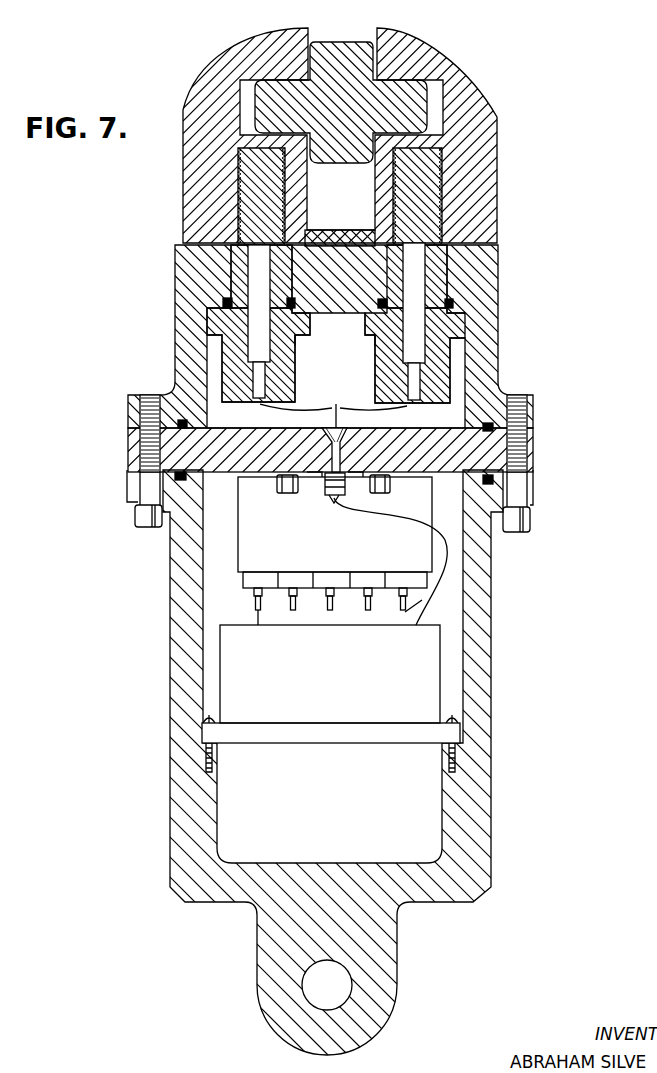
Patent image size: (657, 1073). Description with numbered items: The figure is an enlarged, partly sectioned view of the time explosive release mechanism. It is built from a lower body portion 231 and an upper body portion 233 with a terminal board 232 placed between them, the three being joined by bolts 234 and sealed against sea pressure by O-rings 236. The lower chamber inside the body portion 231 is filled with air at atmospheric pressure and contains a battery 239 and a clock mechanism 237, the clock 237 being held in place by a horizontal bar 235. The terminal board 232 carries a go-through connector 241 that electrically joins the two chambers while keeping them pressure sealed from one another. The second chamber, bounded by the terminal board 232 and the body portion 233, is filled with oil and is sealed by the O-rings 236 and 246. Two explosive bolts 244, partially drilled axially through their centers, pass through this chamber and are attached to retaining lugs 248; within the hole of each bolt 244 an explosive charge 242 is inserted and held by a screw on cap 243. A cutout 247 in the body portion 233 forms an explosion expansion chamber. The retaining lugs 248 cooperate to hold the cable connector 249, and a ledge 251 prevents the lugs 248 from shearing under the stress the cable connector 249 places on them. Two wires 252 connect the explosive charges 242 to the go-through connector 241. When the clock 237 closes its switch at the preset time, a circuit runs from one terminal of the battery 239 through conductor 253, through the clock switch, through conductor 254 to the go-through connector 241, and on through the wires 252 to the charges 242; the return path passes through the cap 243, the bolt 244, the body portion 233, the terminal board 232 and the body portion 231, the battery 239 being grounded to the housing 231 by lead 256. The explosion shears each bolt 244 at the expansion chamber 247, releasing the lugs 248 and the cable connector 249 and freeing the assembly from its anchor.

The body portion 231 is at (487, 718).
The terminal board 232 is at (535, 463).
The body portion 233 is at (493, 328).
The bolts 234 is at (532, 513).
The horizontal bar 235 is at (410, 747).
The O-rings 236 is at (173, 419).
The clock mechanism 237 is at (352, 699).
The battery 239 is at (352, 544).
The go-through connector 241 is at (340, 424).
The explosive charge 242 is at (407, 356).
The screw on cap 243 is at (293, 382).
The explosive bolts 244 is at (302, 342).
The O-rings 246 is at (453, 304).
The cutout 247 is at (232, 252).
The retaining lugs 248 is at (193, 99).
The cable connector 249 is at (358, 44).
The ledge 251 is at (338, 208).
The wires 252 is at (292, 406).
The conductor 253 is at (258, 615).
The conductor 254 is at (421, 613).
The lead 256 is at (427, 569).